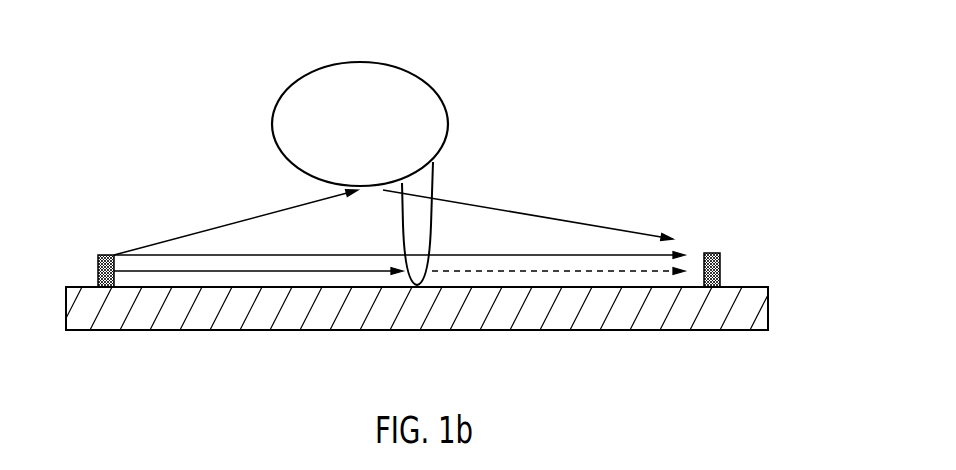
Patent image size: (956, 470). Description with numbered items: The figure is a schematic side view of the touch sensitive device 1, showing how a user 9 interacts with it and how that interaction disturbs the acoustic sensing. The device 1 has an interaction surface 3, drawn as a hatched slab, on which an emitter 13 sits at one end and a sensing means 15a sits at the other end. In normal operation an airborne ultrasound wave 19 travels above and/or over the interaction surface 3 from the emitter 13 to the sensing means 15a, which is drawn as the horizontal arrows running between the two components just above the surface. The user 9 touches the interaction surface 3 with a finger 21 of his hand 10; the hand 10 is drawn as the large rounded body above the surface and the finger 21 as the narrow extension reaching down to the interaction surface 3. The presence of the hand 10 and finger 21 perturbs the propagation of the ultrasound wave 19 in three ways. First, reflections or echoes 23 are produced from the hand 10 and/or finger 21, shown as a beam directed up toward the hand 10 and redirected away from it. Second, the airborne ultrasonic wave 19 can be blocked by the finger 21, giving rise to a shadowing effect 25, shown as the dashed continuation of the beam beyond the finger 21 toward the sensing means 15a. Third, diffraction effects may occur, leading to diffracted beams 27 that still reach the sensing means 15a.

The touch sensitive device 1 is at (698, 370).
The interaction surface 3 is at (760, 286).
The user 9 is at (471, 57).
The hand 10 is at (285, 92).
The emitter 13 is at (105, 254).
The sensing means 15a is at (712, 253).
The airborne ultrasound wave 19 is at (195, 272).
The finger 21 is at (436, 186).
The reflections/echoes 23 is at (522, 210).
The shadowing effect 25 is at (547, 271).
The diffracted beams 27 is at (625, 255).